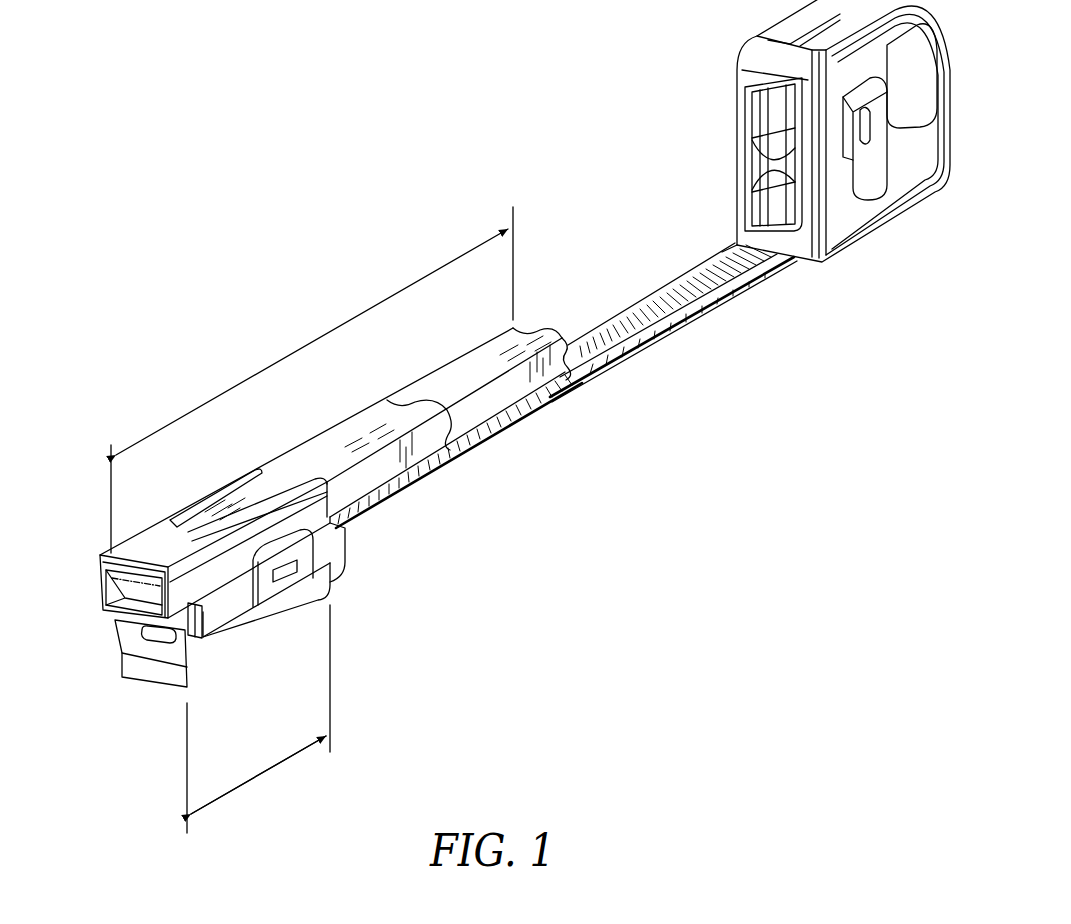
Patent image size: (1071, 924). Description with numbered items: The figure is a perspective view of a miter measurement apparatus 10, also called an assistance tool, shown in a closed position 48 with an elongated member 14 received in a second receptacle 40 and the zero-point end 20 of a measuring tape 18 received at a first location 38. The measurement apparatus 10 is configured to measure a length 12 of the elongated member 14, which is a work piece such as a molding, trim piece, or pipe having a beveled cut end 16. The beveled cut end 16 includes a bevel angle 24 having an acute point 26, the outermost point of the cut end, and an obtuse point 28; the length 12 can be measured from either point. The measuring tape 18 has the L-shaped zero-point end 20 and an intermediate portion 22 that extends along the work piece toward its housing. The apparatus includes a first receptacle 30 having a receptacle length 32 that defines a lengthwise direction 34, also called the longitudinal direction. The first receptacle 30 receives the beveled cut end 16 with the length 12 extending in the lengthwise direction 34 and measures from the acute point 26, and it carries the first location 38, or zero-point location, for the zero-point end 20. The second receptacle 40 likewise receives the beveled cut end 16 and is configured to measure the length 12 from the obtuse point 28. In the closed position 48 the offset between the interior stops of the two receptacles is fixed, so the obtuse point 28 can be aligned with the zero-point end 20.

The miter measurement apparatus 10 is at (112, 411).
The length 12 is at (313, 338).
The elongated member 14 is at (465, 372).
The beveled cut end 16 is at (247, 618).
The measuring tape 18 is at (653, 318).
The zero-point end 20 is at (205, 633).
The intermediate portion 22 is at (578, 348).
The bevel angle 24 is at (290, 580).
The acute point 26 is at (100, 560).
The obtuse point 28 is at (107, 612).
The first receptacle 30 is at (235, 655).
The receptacle length 32 is at (248, 787).
The lengthwise direction 34 is at (258, 775).
The first location 38 is at (190, 680).
The second receptacle 40 is at (222, 490).
The closed position 48 is at (353, 549).